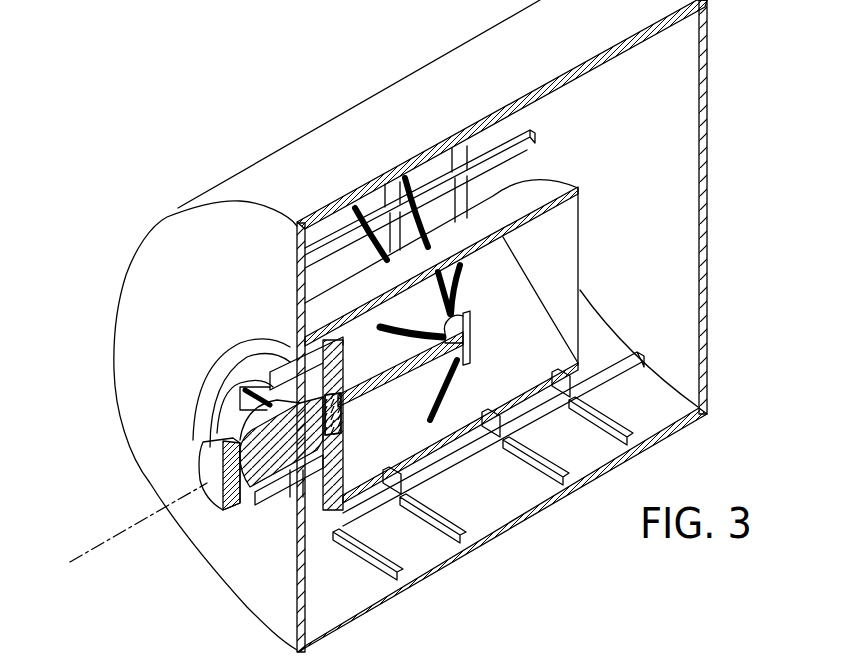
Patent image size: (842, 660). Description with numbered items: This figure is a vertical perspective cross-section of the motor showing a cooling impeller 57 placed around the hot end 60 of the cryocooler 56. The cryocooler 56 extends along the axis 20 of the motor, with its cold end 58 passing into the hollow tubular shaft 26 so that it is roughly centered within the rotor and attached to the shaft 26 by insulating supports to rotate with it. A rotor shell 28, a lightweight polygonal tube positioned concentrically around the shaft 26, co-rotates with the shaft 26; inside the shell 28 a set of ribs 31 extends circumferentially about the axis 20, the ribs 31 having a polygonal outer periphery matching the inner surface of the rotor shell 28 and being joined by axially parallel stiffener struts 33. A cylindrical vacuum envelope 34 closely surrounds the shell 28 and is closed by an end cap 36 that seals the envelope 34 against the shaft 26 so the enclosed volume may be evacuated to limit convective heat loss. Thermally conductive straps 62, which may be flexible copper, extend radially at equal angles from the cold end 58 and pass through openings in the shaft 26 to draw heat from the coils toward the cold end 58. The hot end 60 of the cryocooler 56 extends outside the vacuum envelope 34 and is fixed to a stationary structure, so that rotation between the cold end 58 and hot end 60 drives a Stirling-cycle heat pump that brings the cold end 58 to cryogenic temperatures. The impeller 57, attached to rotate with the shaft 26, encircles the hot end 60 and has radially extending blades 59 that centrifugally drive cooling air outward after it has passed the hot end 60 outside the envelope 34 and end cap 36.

The axis 20 is at (138, 520).
The shaft 26 is at (497, 393).
The rotor shell 28 is at (655, 398).
The ribs 31 is at (530, 470).
The stiffener struts 33 is at (373, 520).
The vacuum envelope 34 is at (538, 369).
The end cap 36 is at (145, 270).
The cryocooler 56 is at (265, 447).
The impeller 57 is at (290, 360).
The cold end 58 is at (462, 343).
The blades 59 is at (283, 500).
The hot end 60 is at (343, 420).
The thermally conductive straps 62 is at (360, 213).